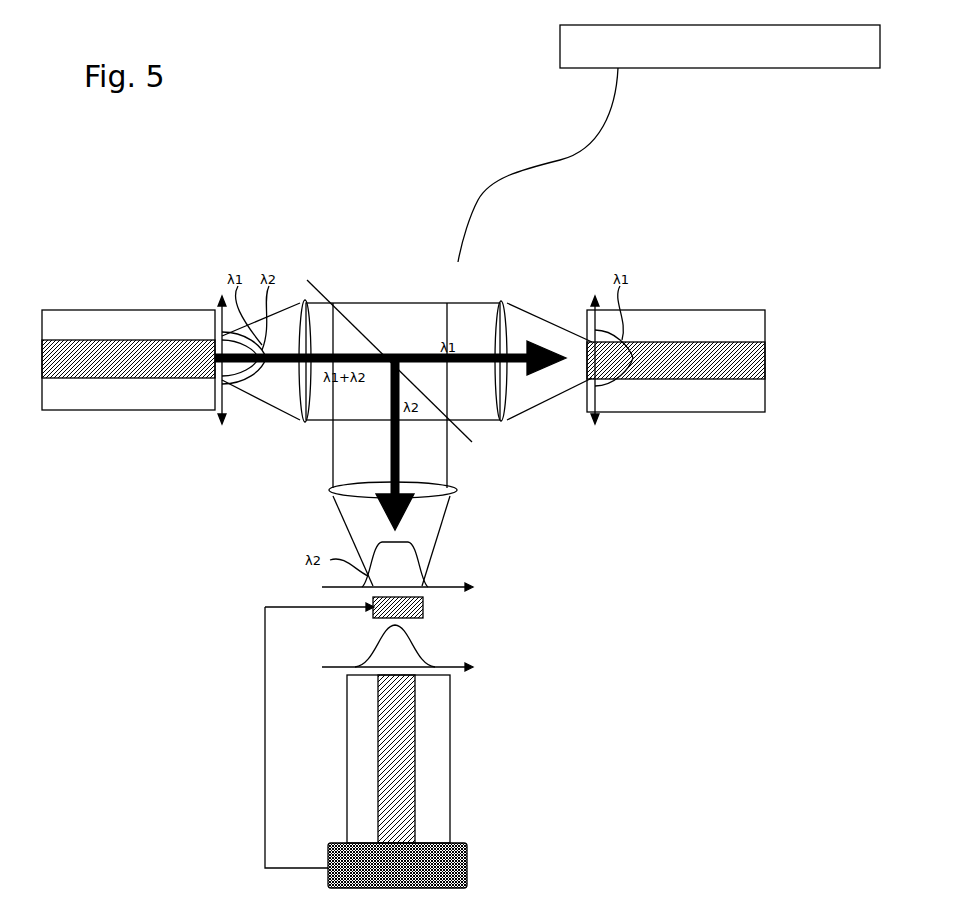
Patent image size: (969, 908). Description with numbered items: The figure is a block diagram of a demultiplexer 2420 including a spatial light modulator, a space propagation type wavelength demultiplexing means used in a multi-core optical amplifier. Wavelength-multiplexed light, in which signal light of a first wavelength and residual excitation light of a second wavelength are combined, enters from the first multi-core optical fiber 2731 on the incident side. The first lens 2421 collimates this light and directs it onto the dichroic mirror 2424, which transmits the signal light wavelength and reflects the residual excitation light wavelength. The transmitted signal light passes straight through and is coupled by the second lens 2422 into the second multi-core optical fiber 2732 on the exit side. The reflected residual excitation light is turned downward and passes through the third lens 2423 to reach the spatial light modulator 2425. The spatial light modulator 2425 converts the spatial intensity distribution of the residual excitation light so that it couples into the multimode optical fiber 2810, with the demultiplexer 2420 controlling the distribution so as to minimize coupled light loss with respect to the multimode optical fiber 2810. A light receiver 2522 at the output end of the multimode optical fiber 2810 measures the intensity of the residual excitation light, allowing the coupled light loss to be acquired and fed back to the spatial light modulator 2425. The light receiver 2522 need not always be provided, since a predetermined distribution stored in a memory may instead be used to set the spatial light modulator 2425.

The first multi-core optical fiber 2731 is at (80, 310).
The second multi-core optical fiber 2732 is at (718, 310).
The demultiplexer including a spatial light modulator 2420 is at (428, 188).
The first lens 2421 is at (303, 298).
The second lens 2422 is at (500, 298).
The dichroic mirror 2424 is at (353, 320).
The third lens 2423 is at (458, 491).
The spatial light modulator 2425 is at (424, 608).
The multimode optical fiber 2810 is at (450, 757).
The light receiver 2522 is at (467, 862).